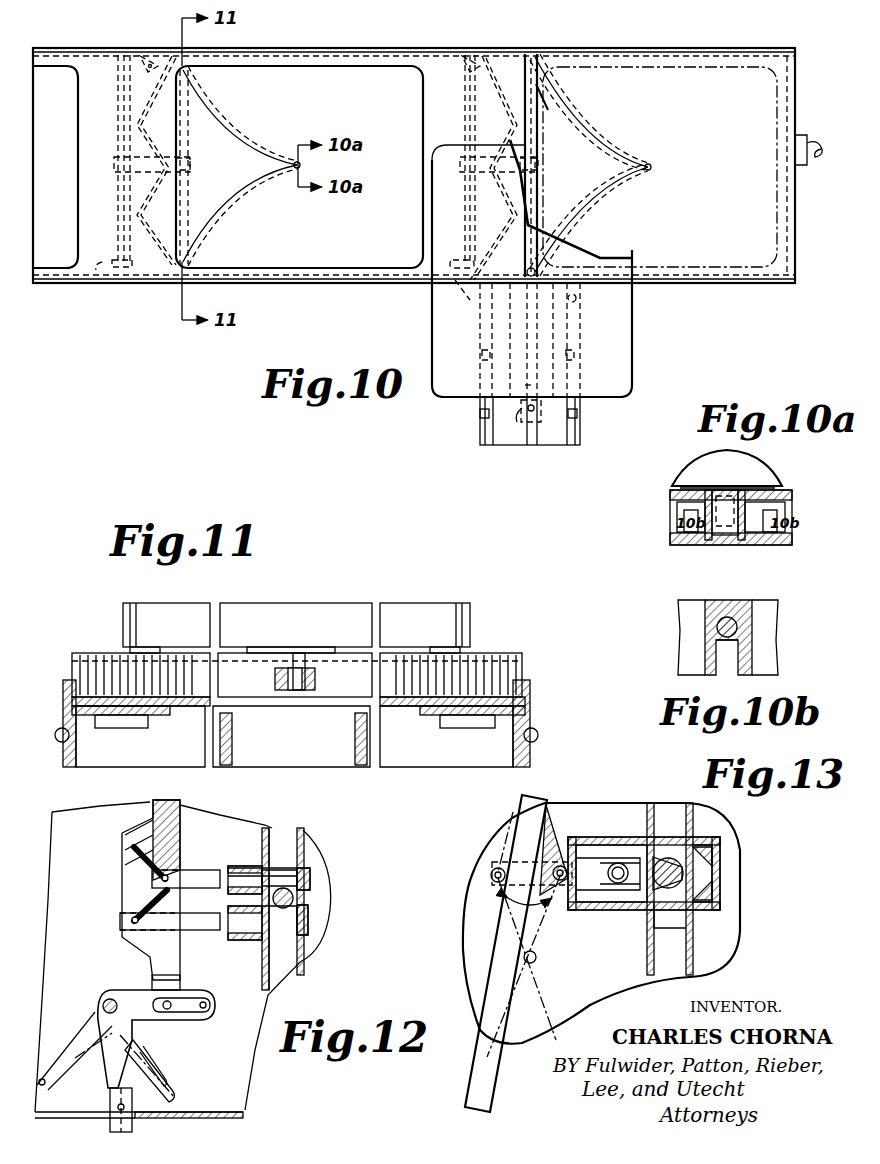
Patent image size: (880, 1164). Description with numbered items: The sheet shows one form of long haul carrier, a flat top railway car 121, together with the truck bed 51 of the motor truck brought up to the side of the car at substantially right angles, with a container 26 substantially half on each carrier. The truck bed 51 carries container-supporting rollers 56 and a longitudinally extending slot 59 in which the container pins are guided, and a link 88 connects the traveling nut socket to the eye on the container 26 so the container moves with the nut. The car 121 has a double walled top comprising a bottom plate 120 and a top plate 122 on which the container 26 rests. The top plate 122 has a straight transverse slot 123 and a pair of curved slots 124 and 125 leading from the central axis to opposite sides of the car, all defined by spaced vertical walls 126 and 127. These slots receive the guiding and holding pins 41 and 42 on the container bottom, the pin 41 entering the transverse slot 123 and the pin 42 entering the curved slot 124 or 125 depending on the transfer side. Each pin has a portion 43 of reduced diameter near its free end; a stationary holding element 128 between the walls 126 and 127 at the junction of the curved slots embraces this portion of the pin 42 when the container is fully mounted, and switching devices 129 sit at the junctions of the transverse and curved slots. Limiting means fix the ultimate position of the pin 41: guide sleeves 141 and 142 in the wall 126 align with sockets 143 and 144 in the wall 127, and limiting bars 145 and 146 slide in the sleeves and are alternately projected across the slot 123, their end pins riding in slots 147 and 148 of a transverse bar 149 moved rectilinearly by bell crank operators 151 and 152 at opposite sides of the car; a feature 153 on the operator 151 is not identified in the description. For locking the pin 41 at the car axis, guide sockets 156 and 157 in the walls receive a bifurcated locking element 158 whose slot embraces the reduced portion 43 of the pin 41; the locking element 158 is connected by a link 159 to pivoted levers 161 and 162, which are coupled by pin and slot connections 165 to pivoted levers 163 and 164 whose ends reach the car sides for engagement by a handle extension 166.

In FIG. 10, the container 26 is at (628, 340).
In FIG. 10A, the container 26 is at (692, 470).
In FIG. 10, the guiding and holding pin 41 is at (535, 387).
In FIG. 11, the guiding and holding pin 41 is at (300, 653).
In FIG. 12, the guiding and holding pin 41 is at (300, 898).
In FIG. 13, the guiding and holding pin 41 is at (683, 875).
In FIG. 10, the guiding and holding pin 42 is at (544, 262).
In FIG. 10A, the guiding and holding pin 42 is at (749, 488).
In FIG. 10B, the guiding and holding pin 42 is at (732, 646).
In FIG. 10B, the portion of reduced diameter 43 is at (737, 627).
In FIG. 10, the truck bed 51 is at (582, 430).
In FIG. 10, the container-supporting rollers 56 is at (480, 358).
In FIG. 10, the longitudinally extending slot 59 is at (531, 425).
In FIG. 10, the link 88 is at (520, 422).
In FIG. 10A, the bottom plate 120 is at (690, 545).
In FIG. 10, the railway car 121 is at (688, 283).
In FIG. 11, the railway car 121 is at (534, 714).
In FIG. 10A, the top plate 122 is at (672, 500).
In FIG. 10, the straight transverse slot 123 is at (188, 176).
In FIG. 12, the straight transverse slot 123 is at (300, 960).
In FIG. 13, the straight transverse slot 123 is at (646, 940).
In FIG. 10, the curved slot 124 is at (226, 201).
In FIG. 10B, the curved slot 124 is at (778, 657).
In FIG. 10, the curved slot 125 is at (213, 118).
In FIG. 10B, the curved slot 125 is at (690, 657).
In FIG. 10A, the vertical wall 126 is at (678, 516).
In FIG. 13, the vertical wall 126 is at (648, 829).
In FIG. 10A, the vertical wall 127 is at (785, 522).
In FIG. 12, the vertical wall 127 is at (300, 848).
In FIG. 13, the vertical wall 127 is at (695, 822).
In FIG. 10B, the stationary holding element 128 is at (740, 600).
In FIG. 10, the switching device 129 is at (505, 85).
In FIG. 12, the guide sleeve 141 is at (252, 858).
In FIG. 12, the guide sleeve 142 is at (246, 940).
In FIG. 12, the socket 143 is at (300, 882).
In FIG. 12, the socket 144 is at (300, 930).
In FIG. 12, the limiting bar 145 is at (195, 888).
In FIG. 12, the limiting bar 146 is at (195, 930).
In FIG. 12, the slot 147 is at (160, 865).
In FIG. 12, the slot 148 is at (130, 912).
In FIG. 10, the transverse bar 149 is at (114, 158).
In FIG. 12, the transverse bar 149 is at (134, 834).
In FIG. 10, the bell crank operator 151 is at (92, 267).
In FIG. 12, the bell crank operator 151 is at (95, 1011).
In FIG. 10, the bell crank operator 152 is at (55, 167).
In FIG. 12, the slot 153 is at (205, 1014).
In FIG. 13, the guide socket 156 is at (588, 845).
In FIG. 13, the guide socket 157 is at (712, 852).
In FIG. 10, the bifurcated locking element 158 is at (188, 156).
In FIG. 11, the bifurcated locking element 158 is at (316, 682).
In FIG. 13, the bifurcated locking element 158 is at (690, 916).
In FIG. 13, the link 159 is at (582, 886).
In FIG. 13, the pivoted lever 161 is at (546, 806).
In FIG. 10, the pivoted lever 162 is at (128, 191).
In FIG. 13, the pivoted lever 162 is at (548, 946).
In FIG. 10, the pivoted lever 163 is at (160, 52).
In FIG. 10, the pivoted lever 164 is at (480, 246).
In FIG. 10, the pin and slot connections 165 is at (327, 168).
In FIG. 10, the handle extension 166 is at (460, 300).